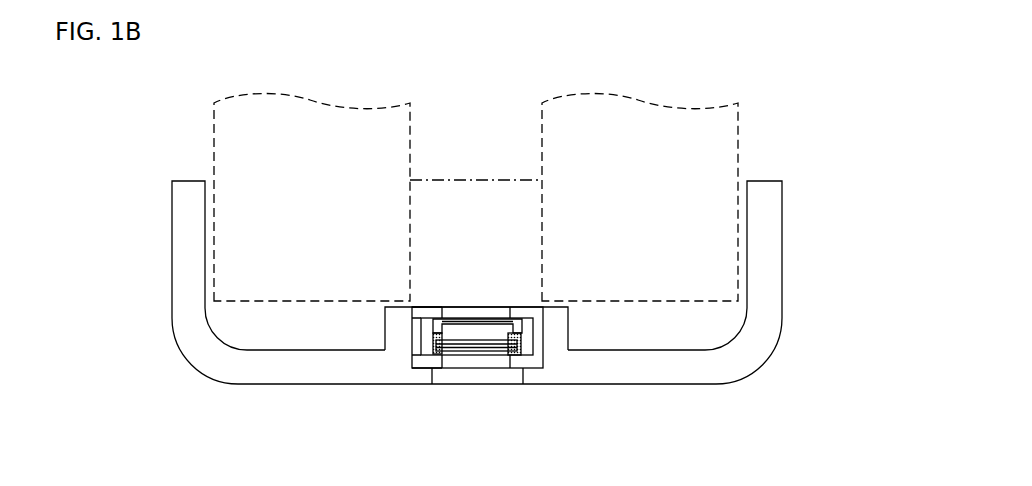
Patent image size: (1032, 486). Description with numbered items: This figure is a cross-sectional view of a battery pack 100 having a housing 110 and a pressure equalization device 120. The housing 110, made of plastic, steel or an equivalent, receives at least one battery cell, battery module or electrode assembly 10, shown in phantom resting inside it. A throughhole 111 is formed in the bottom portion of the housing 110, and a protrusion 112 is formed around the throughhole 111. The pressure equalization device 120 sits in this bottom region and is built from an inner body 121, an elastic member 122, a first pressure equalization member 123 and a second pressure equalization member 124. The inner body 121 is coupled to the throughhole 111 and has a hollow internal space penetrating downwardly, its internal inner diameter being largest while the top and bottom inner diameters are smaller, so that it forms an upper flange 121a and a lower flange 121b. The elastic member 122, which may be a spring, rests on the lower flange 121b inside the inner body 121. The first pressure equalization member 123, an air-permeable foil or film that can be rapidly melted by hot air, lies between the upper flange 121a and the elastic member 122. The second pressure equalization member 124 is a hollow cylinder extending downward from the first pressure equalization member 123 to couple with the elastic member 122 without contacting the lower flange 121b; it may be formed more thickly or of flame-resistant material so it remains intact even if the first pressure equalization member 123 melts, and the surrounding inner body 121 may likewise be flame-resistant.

The battery pack 100 is at (118, 81).
The electrode assembly 10 is at (738, 150).
The housing 110 is at (768, 243).
The throughhole 111 is at (518, 375).
The protrusion 112 is at (558, 323).
The pressure equalization device 120 is at (430, 286).
The inner body 121 is at (413, 338).
The upper flange 121a is at (425, 310).
The lower flange 121b is at (423, 363).
The elastic member 122 is at (476, 399).
The first pressure equalization member 123 is at (516, 315).
The second pressure equalization member 124 is at (517, 343).